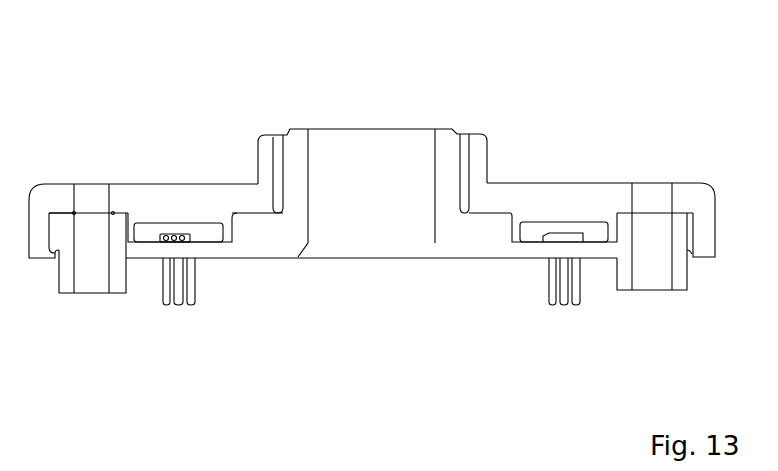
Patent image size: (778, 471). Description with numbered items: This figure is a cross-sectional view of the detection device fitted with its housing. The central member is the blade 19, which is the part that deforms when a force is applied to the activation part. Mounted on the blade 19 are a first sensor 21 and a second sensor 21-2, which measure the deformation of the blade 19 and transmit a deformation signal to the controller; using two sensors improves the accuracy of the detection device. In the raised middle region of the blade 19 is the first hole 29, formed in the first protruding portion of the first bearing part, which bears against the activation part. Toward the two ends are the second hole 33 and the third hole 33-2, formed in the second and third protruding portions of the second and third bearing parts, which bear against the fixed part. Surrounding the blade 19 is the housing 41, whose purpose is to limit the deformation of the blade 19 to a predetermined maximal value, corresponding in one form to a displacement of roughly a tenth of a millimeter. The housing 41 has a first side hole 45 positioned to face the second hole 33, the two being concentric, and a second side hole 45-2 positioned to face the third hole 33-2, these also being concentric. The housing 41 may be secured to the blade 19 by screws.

The blade 19 is at (248, 285).
The first sensor 21 is at (162, 230).
The second sensor 21-2 is at (560, 232).
The first hole 29 is at (388, 174).
The second hole 33 is at (87, 295).
The third hole 33-2 is at (635, 295).
The housing 41 is at (615, 198).
The first side hole 45 is at (75, 183).
The second side hole 45-2 is at (672, 183).